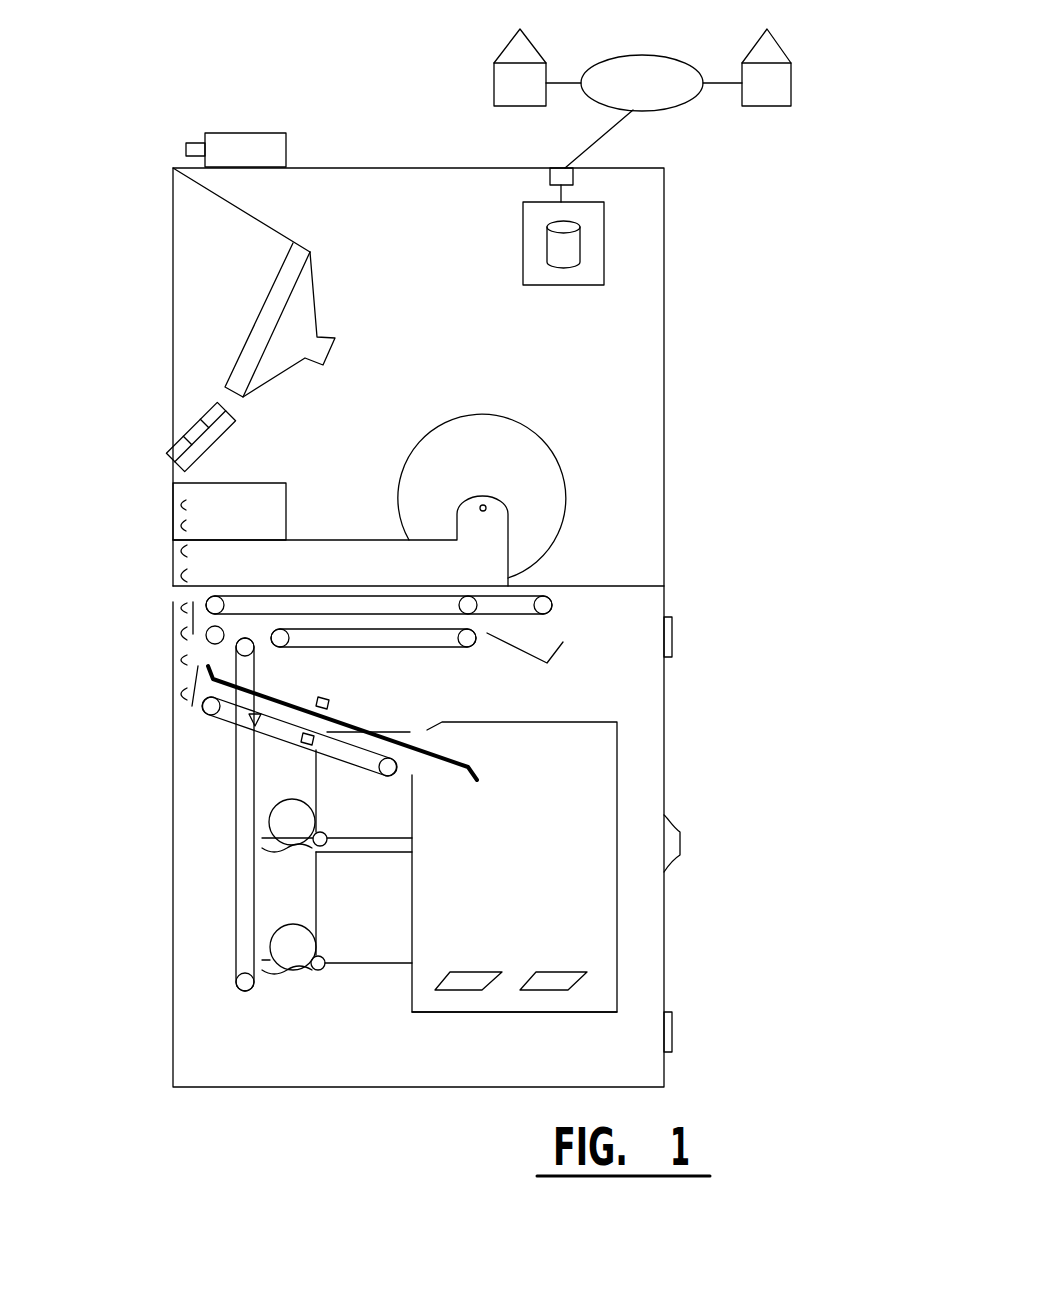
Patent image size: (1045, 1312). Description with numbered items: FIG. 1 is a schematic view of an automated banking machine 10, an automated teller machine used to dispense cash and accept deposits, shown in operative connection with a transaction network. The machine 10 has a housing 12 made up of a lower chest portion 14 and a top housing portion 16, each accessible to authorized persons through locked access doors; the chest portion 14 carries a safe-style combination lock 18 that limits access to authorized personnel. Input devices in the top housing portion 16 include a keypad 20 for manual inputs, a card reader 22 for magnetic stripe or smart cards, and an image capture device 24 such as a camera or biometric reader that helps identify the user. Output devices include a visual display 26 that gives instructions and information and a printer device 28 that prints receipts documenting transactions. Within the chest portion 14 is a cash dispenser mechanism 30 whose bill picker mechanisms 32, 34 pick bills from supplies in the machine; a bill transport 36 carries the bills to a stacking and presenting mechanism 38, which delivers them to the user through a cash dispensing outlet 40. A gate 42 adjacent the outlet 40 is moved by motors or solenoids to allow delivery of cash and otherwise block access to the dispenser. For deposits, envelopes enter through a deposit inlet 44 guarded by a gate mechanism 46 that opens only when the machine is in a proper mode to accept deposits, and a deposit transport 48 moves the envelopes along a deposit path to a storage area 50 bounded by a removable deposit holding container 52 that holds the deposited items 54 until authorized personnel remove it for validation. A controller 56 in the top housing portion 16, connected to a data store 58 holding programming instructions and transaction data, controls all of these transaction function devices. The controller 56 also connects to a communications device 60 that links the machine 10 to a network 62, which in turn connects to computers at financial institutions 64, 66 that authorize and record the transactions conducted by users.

The automated banking machine 10 is at (180, 1107).
The housing 12 is at (664, 519).
The chest portion 14 is at (664, 712).
The top housing portion 16 is at (664, 422).
The combination lock 18 is at (680, 832).
The keypad 20 is at (185, 432).
The card reader 22 is at (235, 483).
The image capture device 24 is at (226, 133).
The visual display 26 is at (241, 344).
The printer device 28 is at (322, 540).
The cash dispenser mechanism 30 is at (355, 657).
The bill picker mechanism 32 is at (326, 828).
The bill picker mechanism 34 is at (322, 953).
The bill transport 36 is at (232, 940).
The stacking and presenting mechanism 38 is at (562, 625).
The cash dispensing outlet 40 is at (162, 602).
The gate 42 is at (193, 618).
The outlet opening 44 is at (134, 695).
The gate mechanism 46 is at (196, 684).
The deposit transport 48 is at (347, 720).
The storage area 50 is at (510, 862).
The deposit holding container 52 is at (462, 1012).
The deposited items 54 is at (475, 971).
The controller 56 is at (604, 263).
The data store 58 is at (550, 243).
The communications device 60 is at (575, 180).
The network 62 is at (652, 55).
The financial institution 64 is at (503, 50).
The financial institution 66 is at (768, 43).